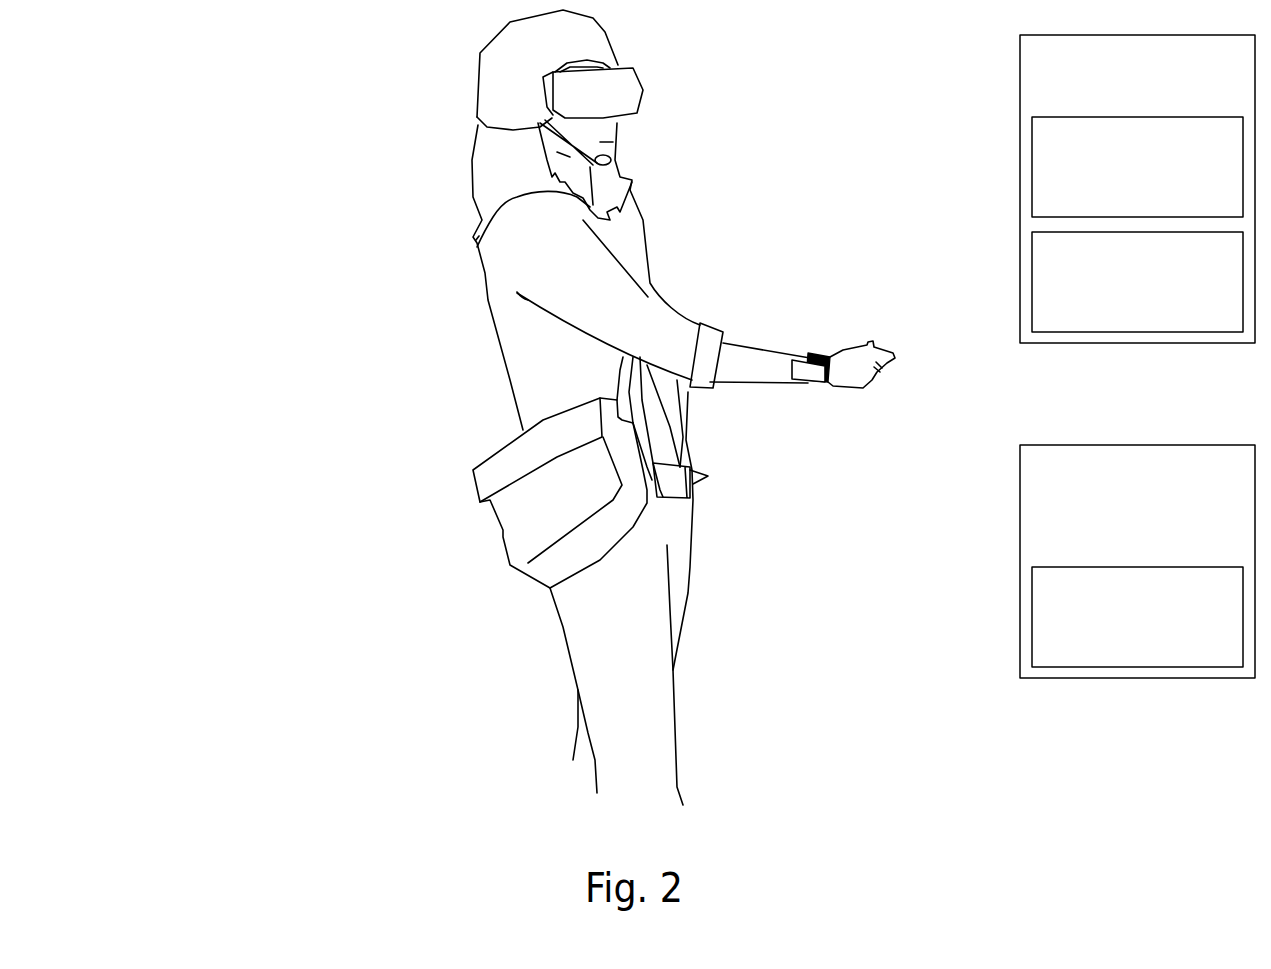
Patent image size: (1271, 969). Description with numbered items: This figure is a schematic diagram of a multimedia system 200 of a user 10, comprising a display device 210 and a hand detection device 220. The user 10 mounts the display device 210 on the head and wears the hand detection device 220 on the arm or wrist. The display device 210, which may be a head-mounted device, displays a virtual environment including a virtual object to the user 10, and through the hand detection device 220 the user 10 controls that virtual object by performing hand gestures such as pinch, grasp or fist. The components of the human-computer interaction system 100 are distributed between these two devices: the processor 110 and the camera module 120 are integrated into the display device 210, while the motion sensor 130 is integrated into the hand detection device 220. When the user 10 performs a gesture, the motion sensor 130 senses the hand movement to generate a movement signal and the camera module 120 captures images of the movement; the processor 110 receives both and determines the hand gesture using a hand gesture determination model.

The user 10 is at (512, 257).
The human-computer interaction system 100 is at (192, 327).
The processor 110 is at (1160, 197).
The camera module 120 is at (1160, 312).
The motion sensor 130 is at (1160, 645).
The multimedia system 200 is at (192, 252).
The display device 210 is at (643, 92).
The hand detection device 220 is at (815, 383).